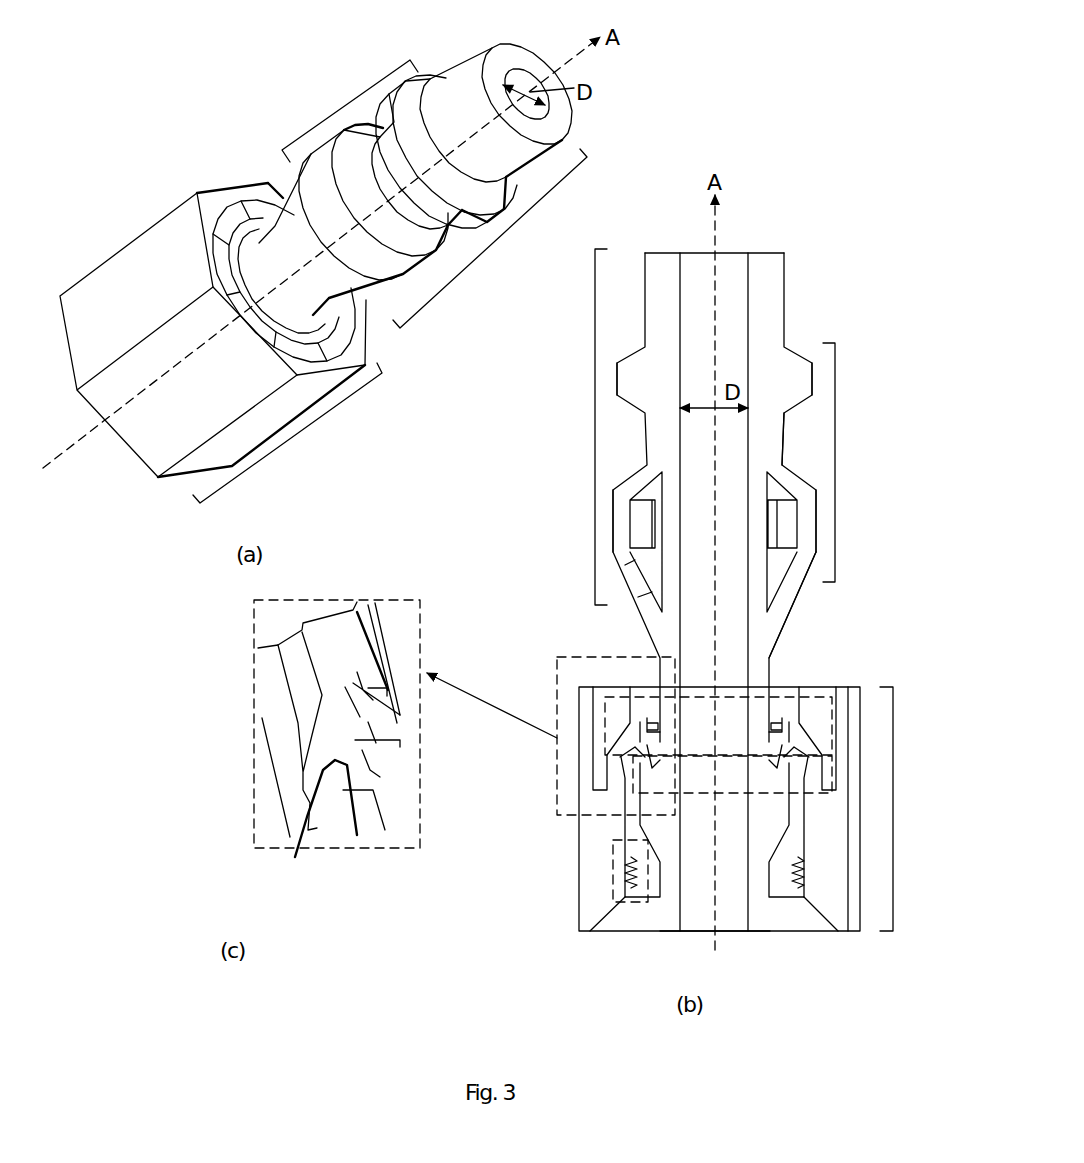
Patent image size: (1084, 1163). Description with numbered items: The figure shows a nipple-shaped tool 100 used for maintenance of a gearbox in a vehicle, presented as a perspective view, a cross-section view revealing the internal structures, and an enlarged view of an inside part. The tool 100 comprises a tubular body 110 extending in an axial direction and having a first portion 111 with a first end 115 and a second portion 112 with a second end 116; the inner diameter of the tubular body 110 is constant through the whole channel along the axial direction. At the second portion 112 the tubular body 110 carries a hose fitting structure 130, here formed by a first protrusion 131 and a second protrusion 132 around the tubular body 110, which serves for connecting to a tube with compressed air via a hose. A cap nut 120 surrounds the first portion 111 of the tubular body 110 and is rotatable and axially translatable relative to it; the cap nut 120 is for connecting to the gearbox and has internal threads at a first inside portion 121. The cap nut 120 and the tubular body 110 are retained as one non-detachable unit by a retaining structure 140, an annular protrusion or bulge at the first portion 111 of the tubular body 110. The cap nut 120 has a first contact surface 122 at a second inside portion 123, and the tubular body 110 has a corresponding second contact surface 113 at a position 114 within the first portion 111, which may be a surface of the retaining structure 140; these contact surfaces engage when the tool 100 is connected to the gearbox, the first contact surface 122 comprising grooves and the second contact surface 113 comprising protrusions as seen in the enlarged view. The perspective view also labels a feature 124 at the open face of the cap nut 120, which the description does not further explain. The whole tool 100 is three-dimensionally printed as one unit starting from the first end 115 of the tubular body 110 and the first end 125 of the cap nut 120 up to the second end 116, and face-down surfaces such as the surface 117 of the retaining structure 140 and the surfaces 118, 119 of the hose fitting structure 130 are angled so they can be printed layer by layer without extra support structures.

The tool 100 is at (690, 80).
The tubular body 110 is at (463, 70).
The first portion 111 is at (292, 437).
The second portion 112 is at (495, 243).
The second contact surface 113 is at (397, 742).
The position 114 is at (800, 784).
The first end 115 is at (667, 931).
The second end 116 is at (770, 252).
The surface 117 is at (780, 838).
The surface 118 is at (797, 590).
The surface 119 is at (794, 410).
The cap nut 120 is at (145, 247).
The first inside portion 121 is at (612, 872).
The first contact surface 122 is at (312, 798).
The second inside portion 123 is at (820, 695).
The retention ring 124 is at (245, 213).
The first end 125 is at (625, 932).
The hose fitting structure 130 is at (350, 110).
The first protrusion 131 is at (398, 97).
The second protrusion 132 is at (290, 155).
The retaining structure 140 is at (638, 797).